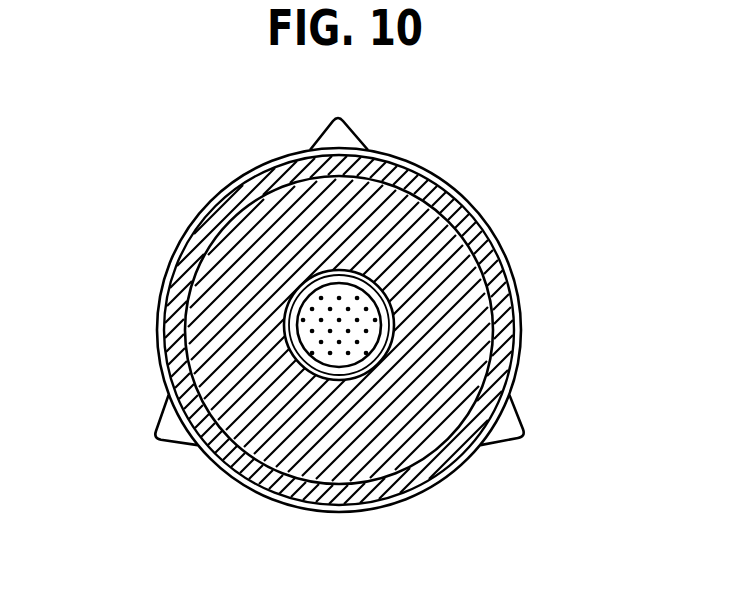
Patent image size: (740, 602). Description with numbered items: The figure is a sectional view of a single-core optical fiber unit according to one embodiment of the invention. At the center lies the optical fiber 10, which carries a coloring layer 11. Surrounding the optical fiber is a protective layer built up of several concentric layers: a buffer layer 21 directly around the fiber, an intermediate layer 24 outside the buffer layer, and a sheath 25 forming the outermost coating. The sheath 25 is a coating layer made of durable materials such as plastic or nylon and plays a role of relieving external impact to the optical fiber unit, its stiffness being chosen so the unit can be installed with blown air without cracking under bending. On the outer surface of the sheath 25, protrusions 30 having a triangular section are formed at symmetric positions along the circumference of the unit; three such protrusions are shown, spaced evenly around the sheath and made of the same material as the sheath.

The optical fiber 10 is at (330, 305).
The coloring layer 11 is at (386, 290).
The buffer layer 21 is at (440, 221).
The intermediate layer 24 is at (288, 475).
The sheath 25 is at (513, 381).
The protrusions 30 is at (166, 405).